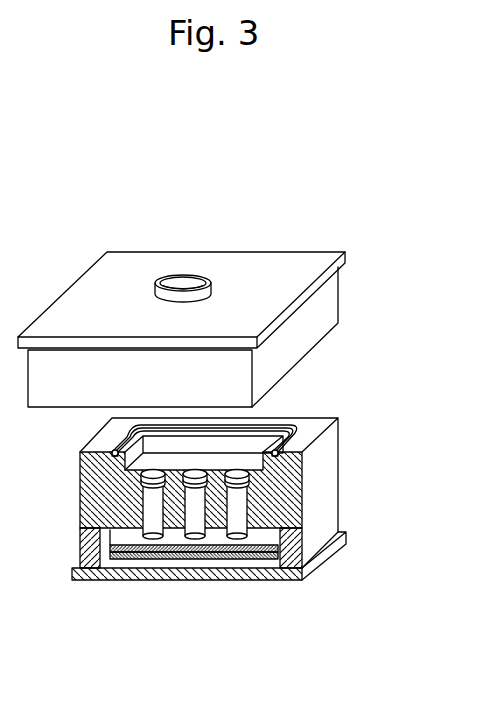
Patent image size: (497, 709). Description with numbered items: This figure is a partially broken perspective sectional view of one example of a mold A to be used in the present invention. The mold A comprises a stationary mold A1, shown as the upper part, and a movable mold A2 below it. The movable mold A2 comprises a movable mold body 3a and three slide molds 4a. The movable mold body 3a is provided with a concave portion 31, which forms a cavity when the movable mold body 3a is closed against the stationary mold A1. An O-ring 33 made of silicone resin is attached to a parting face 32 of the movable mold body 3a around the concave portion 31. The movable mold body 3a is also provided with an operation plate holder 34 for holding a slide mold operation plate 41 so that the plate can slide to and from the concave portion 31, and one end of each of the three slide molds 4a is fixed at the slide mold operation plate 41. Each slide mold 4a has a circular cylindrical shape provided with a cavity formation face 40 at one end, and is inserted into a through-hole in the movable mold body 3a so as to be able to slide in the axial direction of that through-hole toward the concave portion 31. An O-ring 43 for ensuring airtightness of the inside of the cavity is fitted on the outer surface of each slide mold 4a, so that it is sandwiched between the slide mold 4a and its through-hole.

The mold A is at (347, 250).
The stationary mold A1 is at (358, 306).
The movable mold A2 is at (380, 592).
The concave portion 31 is at (248, 457).
The parting face 32 is at (322, 424).
The O-ring 33 is at (128, 437).
The operation plate holder 34 is at (100, 543).
The cavity formation face 40 is at (193, 476).
The slide mold operation plate 41 is at (140, 551).
The O-ring 43 is at (143, 492).
The movable mold body 3a is at (318, 535).
The slide mold 4a is at (152, 536).